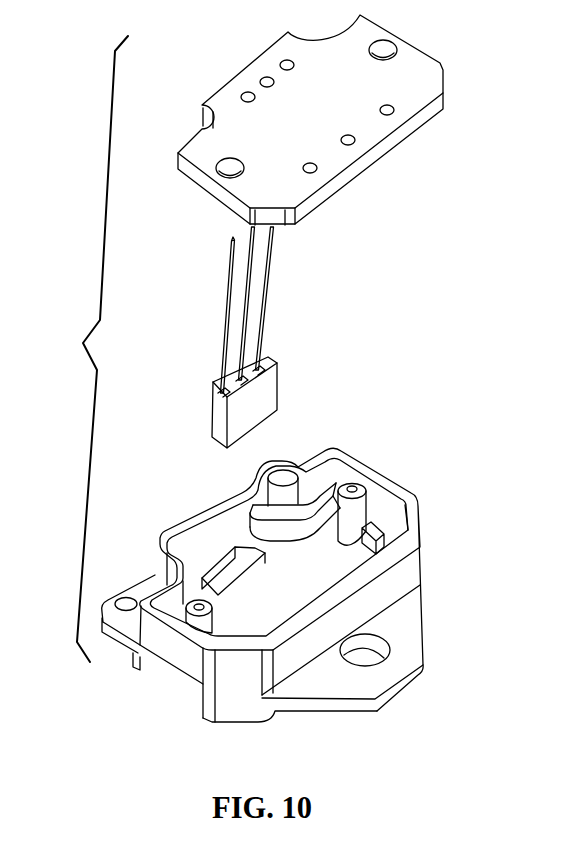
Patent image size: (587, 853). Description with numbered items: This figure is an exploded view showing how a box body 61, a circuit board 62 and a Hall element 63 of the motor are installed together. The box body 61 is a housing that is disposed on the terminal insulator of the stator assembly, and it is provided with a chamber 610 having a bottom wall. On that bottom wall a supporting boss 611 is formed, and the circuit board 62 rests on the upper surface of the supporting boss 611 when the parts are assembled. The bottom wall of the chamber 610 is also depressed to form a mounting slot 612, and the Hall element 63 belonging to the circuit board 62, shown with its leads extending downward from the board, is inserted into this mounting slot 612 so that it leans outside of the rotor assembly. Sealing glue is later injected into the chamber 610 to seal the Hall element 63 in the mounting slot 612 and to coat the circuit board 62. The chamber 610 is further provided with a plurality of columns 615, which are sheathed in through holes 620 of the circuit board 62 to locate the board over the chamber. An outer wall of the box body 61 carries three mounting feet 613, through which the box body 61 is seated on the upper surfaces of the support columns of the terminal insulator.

The box body 61 is at (175, 675).
The chamber 610 is at (262, 617).
The supporting boss 611 is at (378, 527).
The mounting slot 612 is at (214, 572).
The mounting feet 613 is at (407, 632).
The columns 615 is at (360, 485).
The circuit board 62 is at (296, 117).
The through holes 620 is at (385, 50).
The Hall element 63 is at (217, 420).